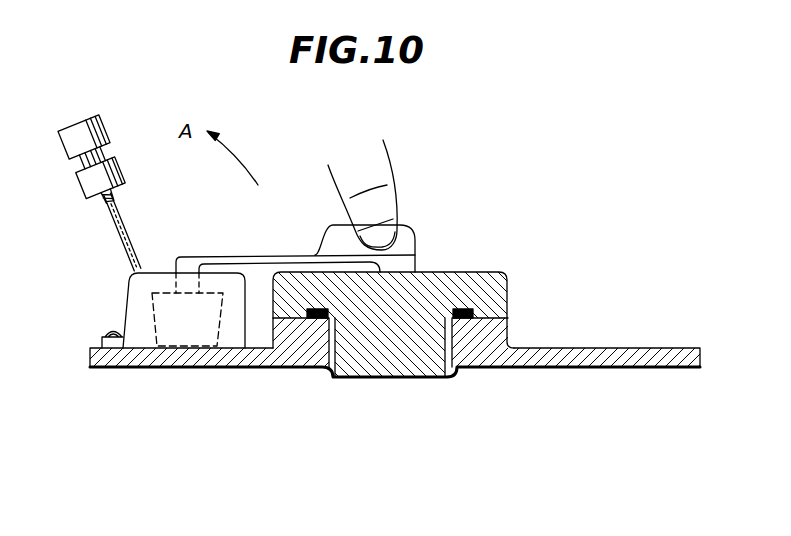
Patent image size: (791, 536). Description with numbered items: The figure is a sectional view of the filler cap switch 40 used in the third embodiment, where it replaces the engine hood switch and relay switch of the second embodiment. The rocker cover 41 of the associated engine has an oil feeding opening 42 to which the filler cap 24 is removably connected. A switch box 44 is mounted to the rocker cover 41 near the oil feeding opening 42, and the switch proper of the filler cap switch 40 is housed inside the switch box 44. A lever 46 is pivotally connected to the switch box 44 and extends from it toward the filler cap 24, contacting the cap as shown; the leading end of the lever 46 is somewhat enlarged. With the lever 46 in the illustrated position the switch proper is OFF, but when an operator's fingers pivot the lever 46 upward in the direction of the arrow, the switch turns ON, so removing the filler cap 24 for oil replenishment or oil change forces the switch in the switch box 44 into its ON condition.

The filler cap 24 is at (444, 293).
The filler cap switch 40 is at (153, 318).
The rocker cover 41 is at (613, 347).
The oil feeding opening 42 is at (338, 337).
The switch box 44 is at (168, 283).
The lever 46 is at (267, 254).